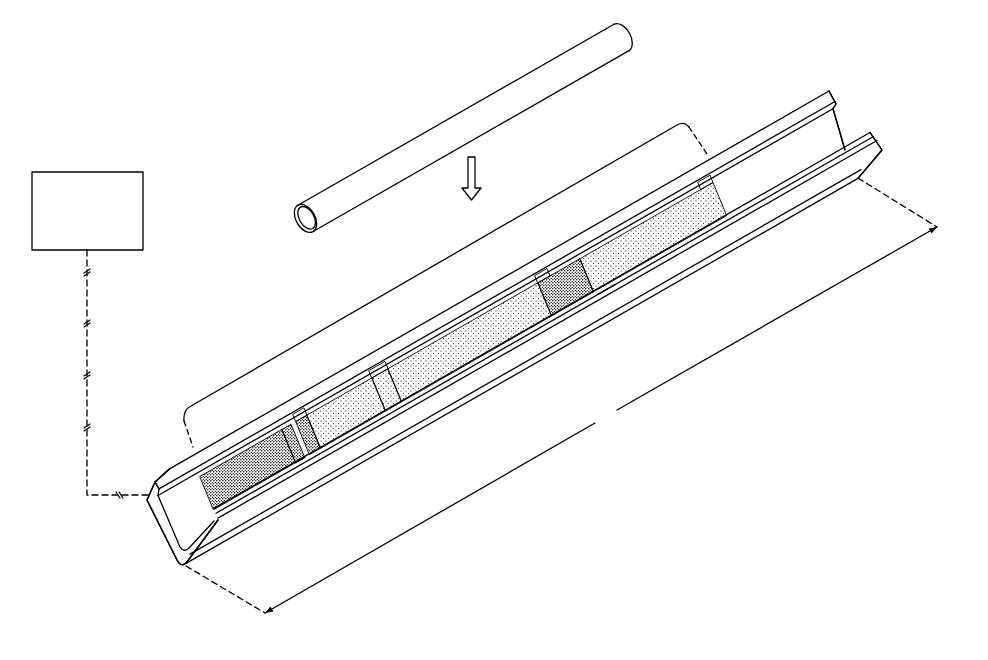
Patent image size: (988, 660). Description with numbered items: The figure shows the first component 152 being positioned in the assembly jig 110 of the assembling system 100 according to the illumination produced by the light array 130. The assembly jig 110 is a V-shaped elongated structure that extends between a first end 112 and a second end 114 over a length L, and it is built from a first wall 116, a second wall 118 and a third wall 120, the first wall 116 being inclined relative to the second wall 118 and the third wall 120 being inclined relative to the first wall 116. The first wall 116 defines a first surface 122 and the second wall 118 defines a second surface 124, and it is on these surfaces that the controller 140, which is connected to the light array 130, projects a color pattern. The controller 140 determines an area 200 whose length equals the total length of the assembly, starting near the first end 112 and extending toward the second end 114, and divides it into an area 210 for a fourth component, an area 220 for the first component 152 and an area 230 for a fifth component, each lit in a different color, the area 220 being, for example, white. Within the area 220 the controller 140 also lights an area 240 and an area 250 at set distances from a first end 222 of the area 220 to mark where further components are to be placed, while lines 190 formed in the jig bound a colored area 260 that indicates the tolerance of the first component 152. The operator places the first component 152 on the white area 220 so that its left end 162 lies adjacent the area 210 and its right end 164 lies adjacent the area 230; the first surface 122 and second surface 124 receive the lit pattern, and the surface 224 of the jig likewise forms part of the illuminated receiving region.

The assembling system 100 is at (85, 87).
The assembly jig 110 is at (494, 329).
The first end 112 is at (168, 574).
The second end 114 is at (850, 116).
The first wall 116 is at (158, 528).
The second wall 118 is at (197, 544).
The third wall 120 is at (149, 494).
The first surface 122 is at (790, 167).
The second surface 124 is at (191, 519).
The light array 130 is at (157, 478).
The controller 140 is at (97, 223).
The first component 152 is at (502, 172).
The left end 162 is at (292, 236).
The right end 164 is at (646, 33).
The lines 190 is at (282, 426).
The area 200 is at (470, 325).
The area 210 is at (253, 472).
The area 220 is at (342, 432).
The first end 222 is at (296, 449).
The inner surface of front wall 224 is at (616, 259).
The area 230 is at (661, 241).
The area 240 is at (400, 402).
The area 250 is at (569, 293).
The colored area 260 is at (306, 437).